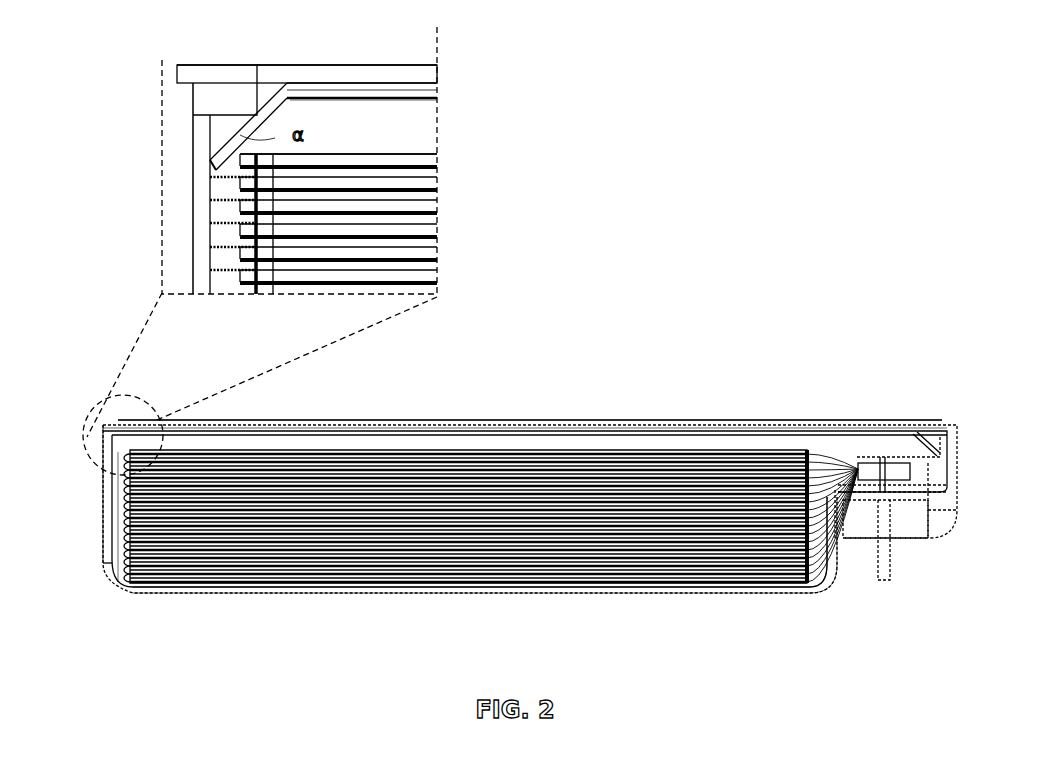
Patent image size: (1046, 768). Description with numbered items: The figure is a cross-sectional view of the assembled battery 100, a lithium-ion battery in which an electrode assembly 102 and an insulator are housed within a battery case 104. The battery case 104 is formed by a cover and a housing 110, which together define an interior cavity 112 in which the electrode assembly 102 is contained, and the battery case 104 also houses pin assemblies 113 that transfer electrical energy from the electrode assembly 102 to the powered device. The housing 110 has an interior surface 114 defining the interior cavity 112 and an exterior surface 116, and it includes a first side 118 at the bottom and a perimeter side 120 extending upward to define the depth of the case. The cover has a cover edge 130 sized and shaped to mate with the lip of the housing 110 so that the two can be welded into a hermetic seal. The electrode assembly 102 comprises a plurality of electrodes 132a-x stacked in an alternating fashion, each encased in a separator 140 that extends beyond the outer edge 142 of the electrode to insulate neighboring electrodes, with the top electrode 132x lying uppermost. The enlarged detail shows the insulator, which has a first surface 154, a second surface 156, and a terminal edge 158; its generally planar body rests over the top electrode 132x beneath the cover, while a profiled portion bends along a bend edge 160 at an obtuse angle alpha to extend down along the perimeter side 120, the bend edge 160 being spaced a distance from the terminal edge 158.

The battery 100 is at (755, 176).
The electrode assembly 102 is at (395, 572).
The battery case 104 is at (99, 568).
The housing 110 is at (245, 595).
The interior cavity 112 is at (845, 515).
The pin assemblies 113 is at (892, 568).
The interior surface 114 is at (745, 560).
The exterior surface 116 is at (805, 596).
The first side 118 is at (598, 595).
The perimeter side 120 is at (103, 516).
The cover edge 130 is at (178, 65).
The top electrode 132x is at (376, 153).
The plurality of electrodes 132a-x is at (437, 160).
The separator 140 is at (210, 200).
The outer edge 142 is at (256, 296).
The first surface 154 is at (440, 82).
The second surface 156 is at (437, 100).
The terminal edge 158 is at (210, 170).
The bend edge 160 is at (287, 85).